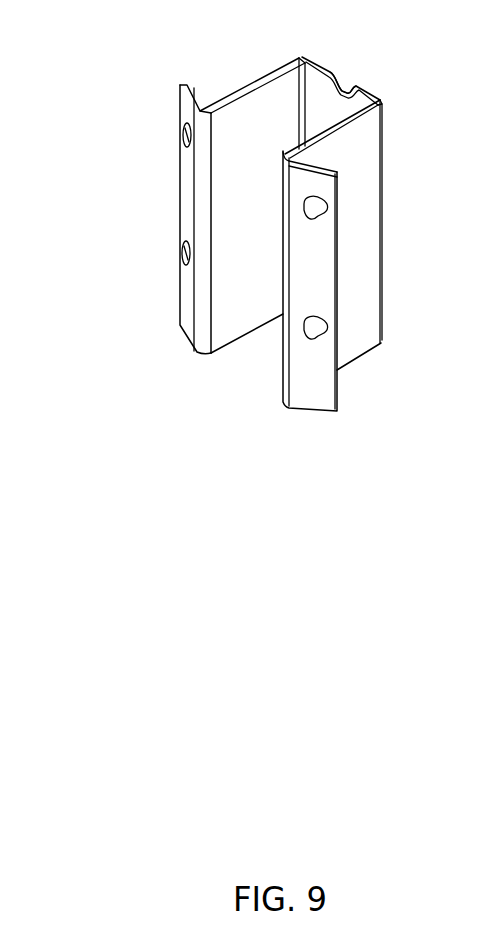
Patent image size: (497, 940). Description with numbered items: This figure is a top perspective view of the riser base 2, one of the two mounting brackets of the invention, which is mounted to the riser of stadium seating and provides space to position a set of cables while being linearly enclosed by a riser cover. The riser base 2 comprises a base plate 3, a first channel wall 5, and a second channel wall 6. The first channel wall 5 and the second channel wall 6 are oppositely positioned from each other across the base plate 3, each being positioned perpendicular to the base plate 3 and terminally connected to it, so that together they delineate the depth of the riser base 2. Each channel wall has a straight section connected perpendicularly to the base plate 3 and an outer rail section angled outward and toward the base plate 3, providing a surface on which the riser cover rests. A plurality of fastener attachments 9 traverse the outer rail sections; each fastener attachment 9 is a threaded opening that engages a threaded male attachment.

The riser base 2 is at (247, 249).
The base plate 3 is at (322, 67).
The first channel wall 5 is at (359, 261).
The second channel wall 6 is at (205, 185).
The fastener attachments 9 is at (176, 137).